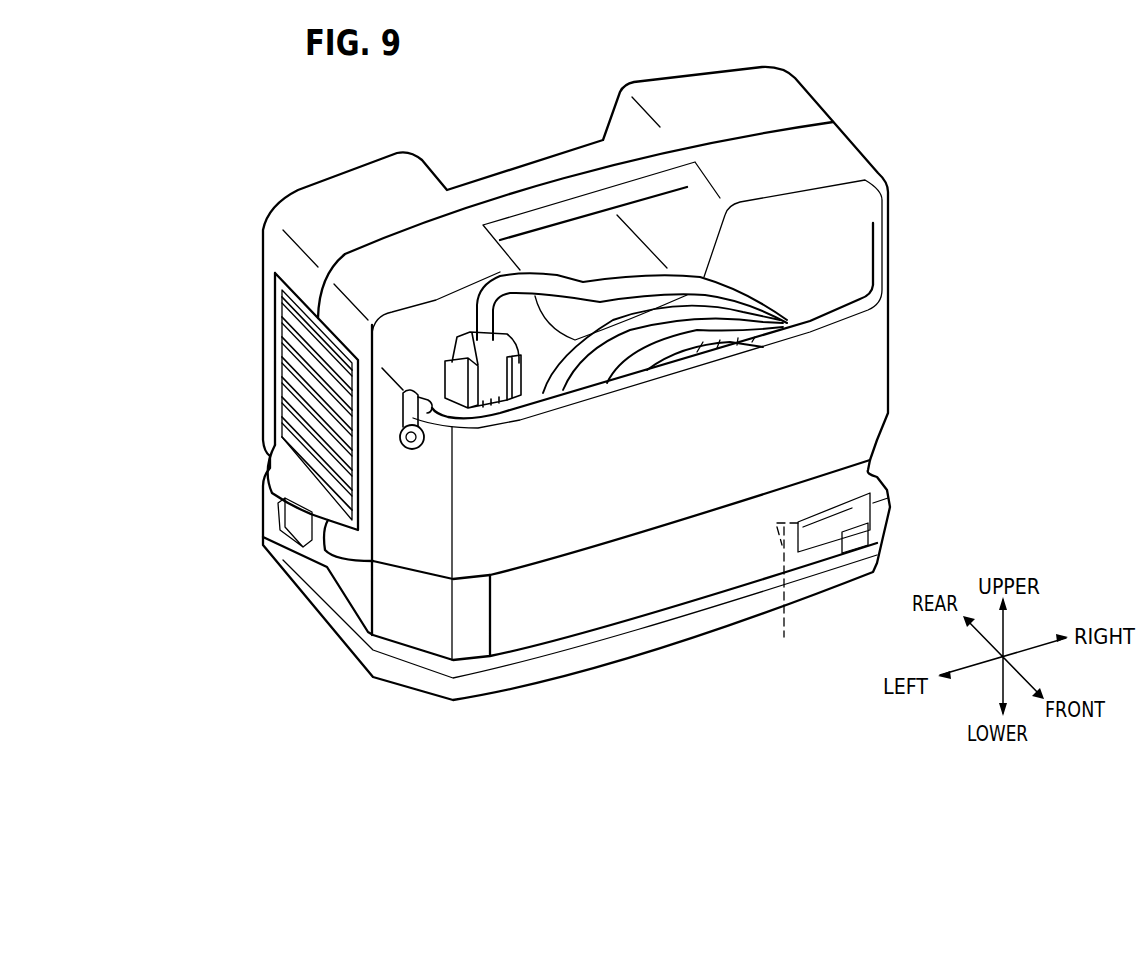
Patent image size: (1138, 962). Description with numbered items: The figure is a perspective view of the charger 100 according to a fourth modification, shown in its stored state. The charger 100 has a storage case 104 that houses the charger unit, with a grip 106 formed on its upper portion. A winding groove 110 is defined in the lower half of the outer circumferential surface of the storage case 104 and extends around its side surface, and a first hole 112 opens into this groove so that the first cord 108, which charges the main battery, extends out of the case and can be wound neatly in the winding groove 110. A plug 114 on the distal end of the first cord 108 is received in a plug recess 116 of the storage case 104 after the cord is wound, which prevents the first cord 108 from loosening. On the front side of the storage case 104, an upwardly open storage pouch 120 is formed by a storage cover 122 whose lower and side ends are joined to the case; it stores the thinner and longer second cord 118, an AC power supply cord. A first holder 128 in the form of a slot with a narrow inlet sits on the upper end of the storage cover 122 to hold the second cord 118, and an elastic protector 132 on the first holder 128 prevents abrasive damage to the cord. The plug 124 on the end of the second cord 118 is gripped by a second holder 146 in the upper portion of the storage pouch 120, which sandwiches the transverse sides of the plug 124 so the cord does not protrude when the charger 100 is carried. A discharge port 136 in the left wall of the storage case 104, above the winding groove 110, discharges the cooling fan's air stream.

The charger 100 is at (683, 49).
The storage case 104 is at (840, 150).
The grip 106 is at (523, 170).
The first cord 108 is at (880, 482).
The winding groove 110 is at (840, 531).
The first hole 112 is at (786, 596).
The plug 114 is at (417, 638).
The plug recess 116 is at (358, 592).
The second cord 118 is at (745, 300).
The storage pouch 120 is at (840, 248).
The storage cover 122 is at (850, 342).
The plug 124 is at (460, 343).
The first holder 128 is at (405, 449).
The protector 132 is at (430, 410).
The discharge port 136 is at (306, 410).
The second holder 146 is at (515, 378).